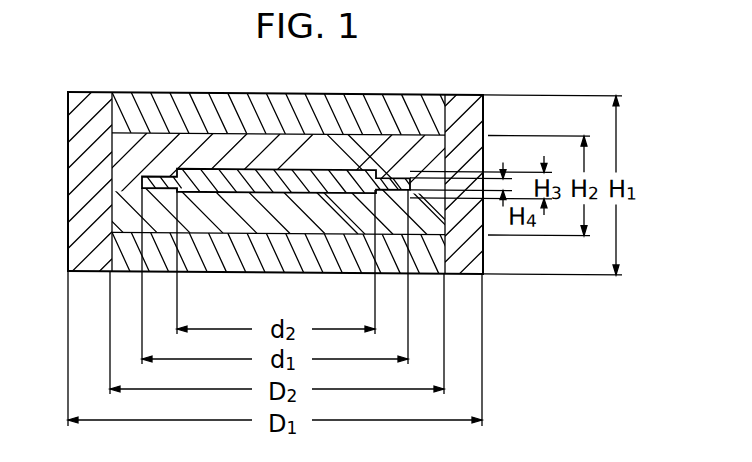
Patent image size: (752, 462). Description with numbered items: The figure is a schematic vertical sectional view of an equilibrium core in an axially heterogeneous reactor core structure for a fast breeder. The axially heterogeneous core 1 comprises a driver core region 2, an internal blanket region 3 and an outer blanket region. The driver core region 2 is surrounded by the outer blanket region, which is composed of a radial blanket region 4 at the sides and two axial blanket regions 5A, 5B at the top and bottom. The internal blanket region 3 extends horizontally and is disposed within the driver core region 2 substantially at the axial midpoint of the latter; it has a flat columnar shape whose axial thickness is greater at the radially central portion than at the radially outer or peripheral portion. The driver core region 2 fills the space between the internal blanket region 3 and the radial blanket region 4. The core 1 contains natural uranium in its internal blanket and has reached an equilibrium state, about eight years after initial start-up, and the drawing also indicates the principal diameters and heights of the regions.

The axially heterogeneous core 1 is at (68, 143).
The driver core region 2 is at (232, 140).
The internal blanket region 3 is at (288, 188).
The radial blanket region 4 is at (77, 243).
The axial blanket region 5A is at (150, 103).
The axial blanket region 5B is at (212, 268).